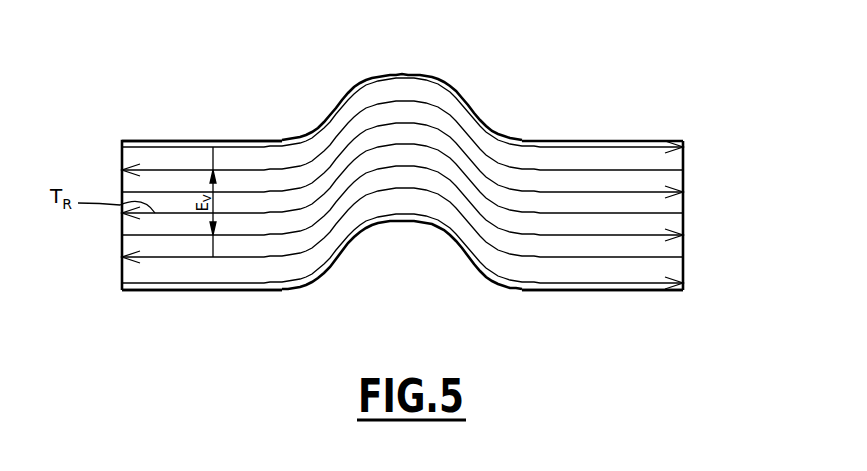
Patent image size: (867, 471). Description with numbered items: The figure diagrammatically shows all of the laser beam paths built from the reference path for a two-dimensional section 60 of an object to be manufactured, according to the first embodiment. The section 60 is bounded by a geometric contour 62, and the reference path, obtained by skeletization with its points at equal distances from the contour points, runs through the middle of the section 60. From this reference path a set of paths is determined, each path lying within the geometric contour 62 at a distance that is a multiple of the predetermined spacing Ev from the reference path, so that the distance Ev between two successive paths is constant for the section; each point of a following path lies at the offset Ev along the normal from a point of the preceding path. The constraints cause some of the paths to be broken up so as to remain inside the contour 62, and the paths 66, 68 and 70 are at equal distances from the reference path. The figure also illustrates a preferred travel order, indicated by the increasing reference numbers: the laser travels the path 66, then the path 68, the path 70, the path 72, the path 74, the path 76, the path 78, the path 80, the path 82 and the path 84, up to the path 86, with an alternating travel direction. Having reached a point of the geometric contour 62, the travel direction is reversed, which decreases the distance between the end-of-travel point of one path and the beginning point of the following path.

The two-dimensional section 60 is at (603, 121).
The geometric contour 62 is at (566, 290).
The path 66 is at (223, 141).
The path 68 is at (428, 74).
The path 70 is at (533, 141).
The path 72 is at (649, 170).
The path 74 is at (633, 192).
The path 76 is at (652, 213).
The path 78 is at (641, 236).
The path 80 is at (655, 258).
The path 82 is at (246, 290).
The path 84 is at (403, 222).
The path 86 is at (649, 290).